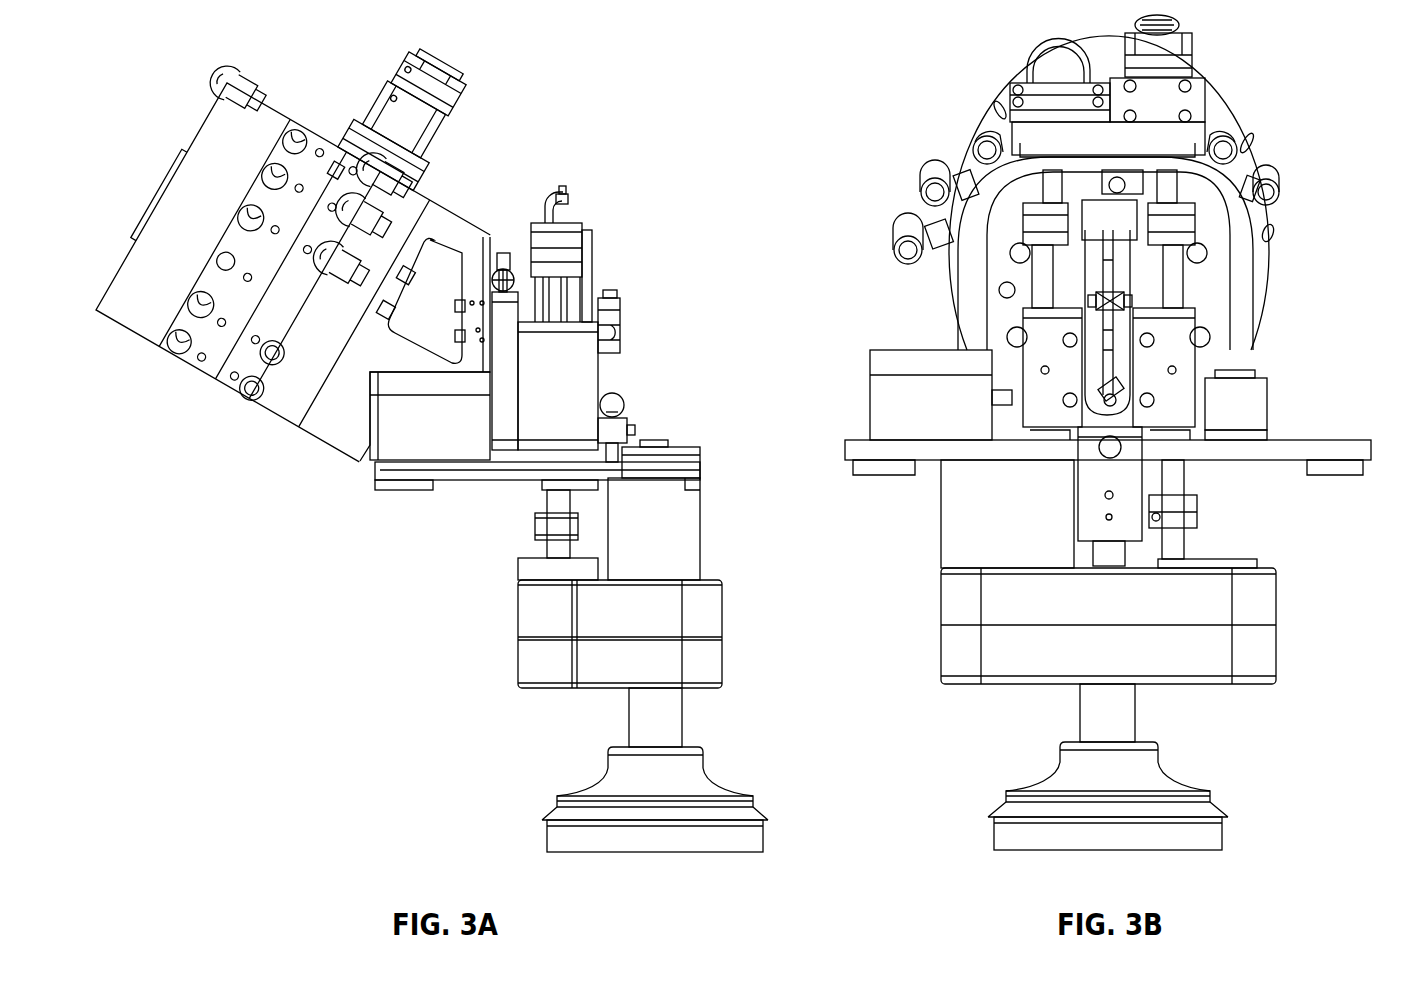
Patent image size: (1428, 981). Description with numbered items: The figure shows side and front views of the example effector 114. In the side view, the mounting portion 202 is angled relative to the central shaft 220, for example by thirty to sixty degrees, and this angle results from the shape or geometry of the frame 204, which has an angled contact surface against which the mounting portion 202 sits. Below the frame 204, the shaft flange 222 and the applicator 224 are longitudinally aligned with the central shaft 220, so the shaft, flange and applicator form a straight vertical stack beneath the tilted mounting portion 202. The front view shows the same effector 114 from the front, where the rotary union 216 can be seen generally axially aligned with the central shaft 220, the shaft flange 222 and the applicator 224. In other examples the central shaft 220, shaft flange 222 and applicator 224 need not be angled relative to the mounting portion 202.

In FIG. 3A, the effector 114 is at (622, 108).
In FIG. 3B, the effector 114 is at (1319, 72).
In FIG. 3A, the mounting portion 202 is at (290, 121).
In FIG. 3A, the frame 204 is at (470, 223).
In FIG. 3B, the rotary union 216 is at (1109, 482).
In FIG. 3A, the central shaft 220 is at (665, 708).
In FIG. 3B, the central shaft 220 is at (1125, 702).
In FIG. 3A, the shaft flange 222 is at (622, 785).
In FIG. 3B, the shaft flange 222 is at (1082, 777).
In FIG. 3A, the applicator 224 is at (750, 837).
In FIG. 3B, the applicator 224 is at (1206, 835).